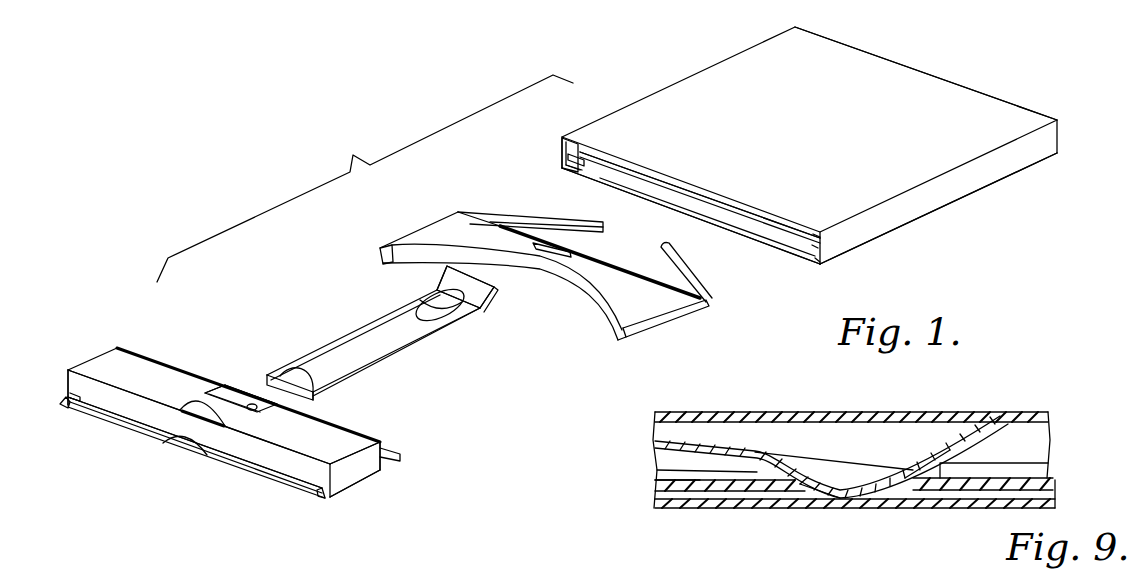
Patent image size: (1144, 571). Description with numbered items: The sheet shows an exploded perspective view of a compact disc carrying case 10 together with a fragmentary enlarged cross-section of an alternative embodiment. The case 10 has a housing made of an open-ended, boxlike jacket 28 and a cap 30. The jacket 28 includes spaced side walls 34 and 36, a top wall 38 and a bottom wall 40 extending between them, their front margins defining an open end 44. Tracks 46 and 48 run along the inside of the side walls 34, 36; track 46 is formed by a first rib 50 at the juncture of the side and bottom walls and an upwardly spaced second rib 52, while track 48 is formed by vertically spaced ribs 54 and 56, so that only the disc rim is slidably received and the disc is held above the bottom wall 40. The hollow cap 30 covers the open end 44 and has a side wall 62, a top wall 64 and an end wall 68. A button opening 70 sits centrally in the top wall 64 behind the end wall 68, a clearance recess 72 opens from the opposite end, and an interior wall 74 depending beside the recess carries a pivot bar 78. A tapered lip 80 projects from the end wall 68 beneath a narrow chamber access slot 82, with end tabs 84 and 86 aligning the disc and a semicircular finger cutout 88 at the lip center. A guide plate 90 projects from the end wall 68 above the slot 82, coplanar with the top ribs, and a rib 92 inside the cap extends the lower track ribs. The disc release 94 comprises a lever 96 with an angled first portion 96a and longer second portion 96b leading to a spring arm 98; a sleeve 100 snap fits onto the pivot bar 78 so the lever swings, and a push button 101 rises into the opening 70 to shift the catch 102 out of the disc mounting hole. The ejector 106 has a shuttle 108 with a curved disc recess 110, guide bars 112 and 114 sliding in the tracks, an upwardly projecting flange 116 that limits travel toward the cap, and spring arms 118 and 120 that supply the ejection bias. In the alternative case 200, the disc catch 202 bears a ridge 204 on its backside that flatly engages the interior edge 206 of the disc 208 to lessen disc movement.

In FIG. 1, the disc carrying case 10 is at (365, 178).
In FIG. 1, the jacket 28 is at (918, 80).
In FIG. 1, the cap 30 is at (355, 488).
In FIG. 1, the side wall 34 is at (566, 146).
In FIG. 1, the side wall 36 is at (888, 221).
In FIG. 1, the top wall 38 is at (742, 62).
In FIG. 1, the bottom wall 40 is at (713, 212).
In FIG. 1, the open end 44 is at (660, 200).
In FIG. 1, the track 46 is at (592, 160).
In FIG. 1, the track 48 is at (816, 250).
In FIG. 1, the first rib 50 is at (563, 168).
In FIG. 1, the second rib 52 is at (582, 136).
In FIG. 1, the rib 54 is at (818, 262).
In FIG. 1, the rib 56 is at (815, 234).
In FIG. 1, the side wall 62 is at (368, 467).
In FIG. 1, the top wall 64 is at (120, 353).
In FIG. 1, the end wall 68 is at (73, 382).
In FIG. 1, the button opening 70 is at (198, 404).
In FIG. 1, the clearance recess 72 is at (238, 388).
In FIG. 1, the interior wall 74 is at (217, 390).
In FIG. 1, the pivot bar 78 is at (263, 408).
In FIG. 1, the tapered lip 80 is at (280, 481).
In FIG. 1, the chamber access slot 82 is at (242, 466).
In FIG. 1, the end tab 84 is at (66, 405).
In FIG. 1, the end tab 86 is at (323, 494).
In FIG. 1, the finger cutout 88 is at (187, 447).
In FIG. 1, the guide plate 90 is at (393, 443).
In FIG. 1, the rib 92 is at (77, 400).
In FIG. 1, the disc release 94 is at (374, 318).
In FIG. 1, the lever 96 is at (420, 344).
In FIG. 1, the first portion 96a is at (331, 388).
In FIG. 1, the second portion 96b is at (451, 321).
In FIG. 1, the spring arm 98 is at (490, 297).
In FIG. 1, the sleeve 100 is at (346, 380).
In FIG. 1, the push button 101 is at (298, 378).
In FIG. 1, the catch 102 is at (432, 306).
In FIG. 1, the ejector 106 is at (618, 342).
In FIG. 1, the shuttle 108 is at (638, 290).
In FIG. 1, the disc recess 110 is at (603, 304).
In FIG. 1, the guide bar 112 is at (380, 252).
In FIG. 1, the guide bar 114 is at (650, 337).
In FIG. 1, the flange 116 is at (548, 258).
In FIG. 1, the spring arm 118 is at (562, 218).
In FIG. 1, the spring arm 120 is at (686, 274).
In FIG. 9, the disc case 200 is at (1010, 412).
In FIG. 9, the disc catch 202 is at (828, 470).
In FIG. 9, the ridge 204 is at (910, 488).
In FIG. 9, the interior edge 206 is at (786, 497).
In FIG. 9, the disc 208 is at (660, 487).